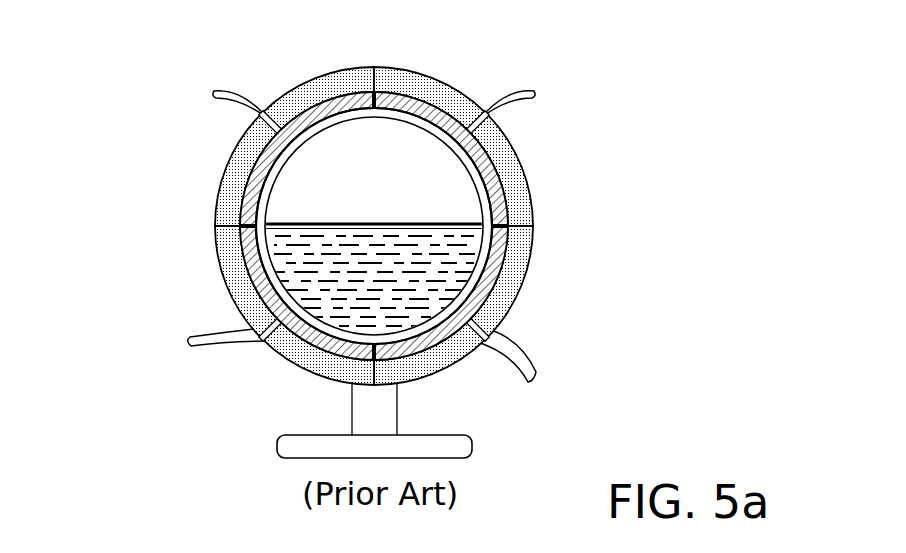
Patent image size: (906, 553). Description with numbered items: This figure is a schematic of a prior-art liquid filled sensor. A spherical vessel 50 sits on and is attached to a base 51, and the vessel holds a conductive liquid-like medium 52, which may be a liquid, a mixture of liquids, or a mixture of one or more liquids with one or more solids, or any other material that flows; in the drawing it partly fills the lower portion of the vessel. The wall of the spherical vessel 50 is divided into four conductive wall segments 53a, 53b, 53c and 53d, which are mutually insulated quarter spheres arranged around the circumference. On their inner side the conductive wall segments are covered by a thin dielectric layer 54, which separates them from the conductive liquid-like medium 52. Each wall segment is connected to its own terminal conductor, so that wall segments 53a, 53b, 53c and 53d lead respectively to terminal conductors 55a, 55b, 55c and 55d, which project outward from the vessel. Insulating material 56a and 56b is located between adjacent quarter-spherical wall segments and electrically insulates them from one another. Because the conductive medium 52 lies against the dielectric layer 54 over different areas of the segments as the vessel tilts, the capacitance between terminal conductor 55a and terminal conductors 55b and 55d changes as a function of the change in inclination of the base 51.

The spherical vessel 50 is at (668, 28).
The base 51 is at (250, 405).
The conductive liquid-like medium 52 is at (374, 275).
The conductive wall segment 53a is at (249, 272).
The conductive wall segment 53b is at (253, 177).
The conductive wall segment 53c is at (494, 166).
The conductive wall segment 53d is at (499, 273).
The thin dielectric layer 54 is at (310, 134).
The terminal conductor 55a is at (208, 334).
The terminal conductor 55b is at (236, 88).
The terminal conductor 55c is at (510, 84).
The terminal conductor 55d is at (531, 355).
The insulating material 56a is at (238, 225).
The insulating material 56b is at (372, 91).